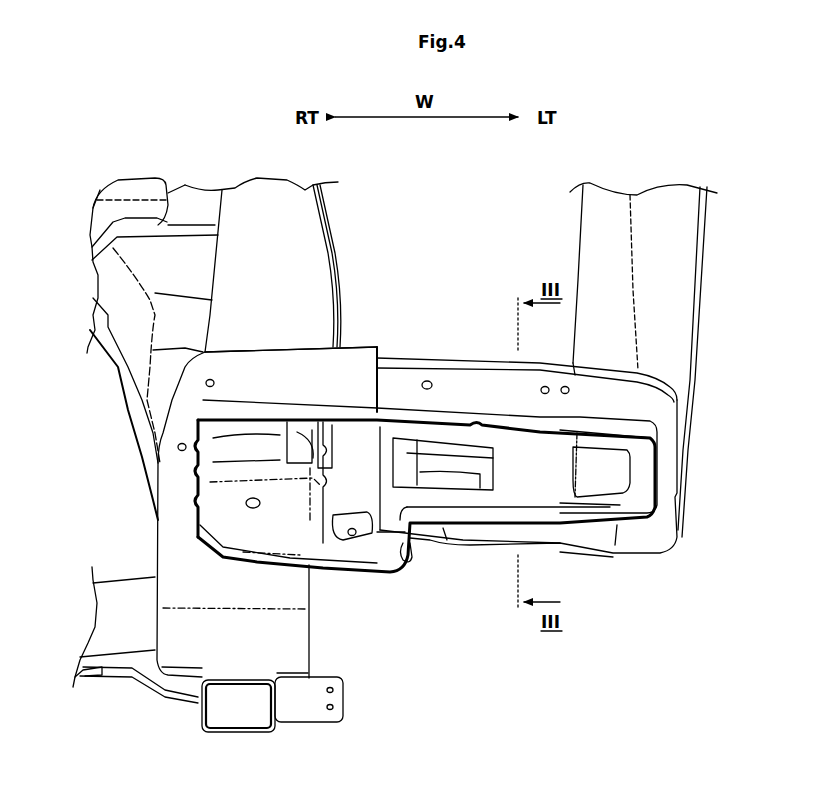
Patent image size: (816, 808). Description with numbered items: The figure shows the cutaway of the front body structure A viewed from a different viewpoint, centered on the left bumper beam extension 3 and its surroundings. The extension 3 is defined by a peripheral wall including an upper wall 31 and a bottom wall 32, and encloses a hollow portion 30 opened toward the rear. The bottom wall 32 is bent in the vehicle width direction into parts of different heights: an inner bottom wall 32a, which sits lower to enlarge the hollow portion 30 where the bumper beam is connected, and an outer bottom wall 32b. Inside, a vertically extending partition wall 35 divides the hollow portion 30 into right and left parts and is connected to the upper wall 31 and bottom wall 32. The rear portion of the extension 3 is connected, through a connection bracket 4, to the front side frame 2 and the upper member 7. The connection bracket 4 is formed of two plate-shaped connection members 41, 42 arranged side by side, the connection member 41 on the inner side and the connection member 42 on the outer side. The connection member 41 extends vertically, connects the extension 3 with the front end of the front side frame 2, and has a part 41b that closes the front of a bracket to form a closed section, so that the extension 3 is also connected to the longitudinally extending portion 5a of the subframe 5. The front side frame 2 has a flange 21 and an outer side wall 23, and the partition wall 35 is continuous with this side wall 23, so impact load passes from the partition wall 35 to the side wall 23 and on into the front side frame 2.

The front side frame 2 is at (348, 212).
The bumper beam extension 3 is at (422, 560).
The connection bracket 4 is at (421, 340).
The subframe 5 is at (198, 210).
The longitudinally extending portion 5a is at (153, 417).
The upper member 7 is at (587, 232).
The pillar flange 21 is at (342, 255).
The side wall 23 is at (343, 304).
The hollow portion 30 is at (447, 530).
The upper wall 31 is at (485, 410).
The bottom wall 32 is at (400, 592).
The bottom wall on the inner side 32a is at (372, 578).
The bottom wall on the outer side 32b is at (617, 532).
The partition wall 35 is at (345, 537).
The connection member 41 is at (167, 542).
The part 41b is at (298, 660).
The connection member 42 is at (460, 368).
The body structure A is at (550, 675).